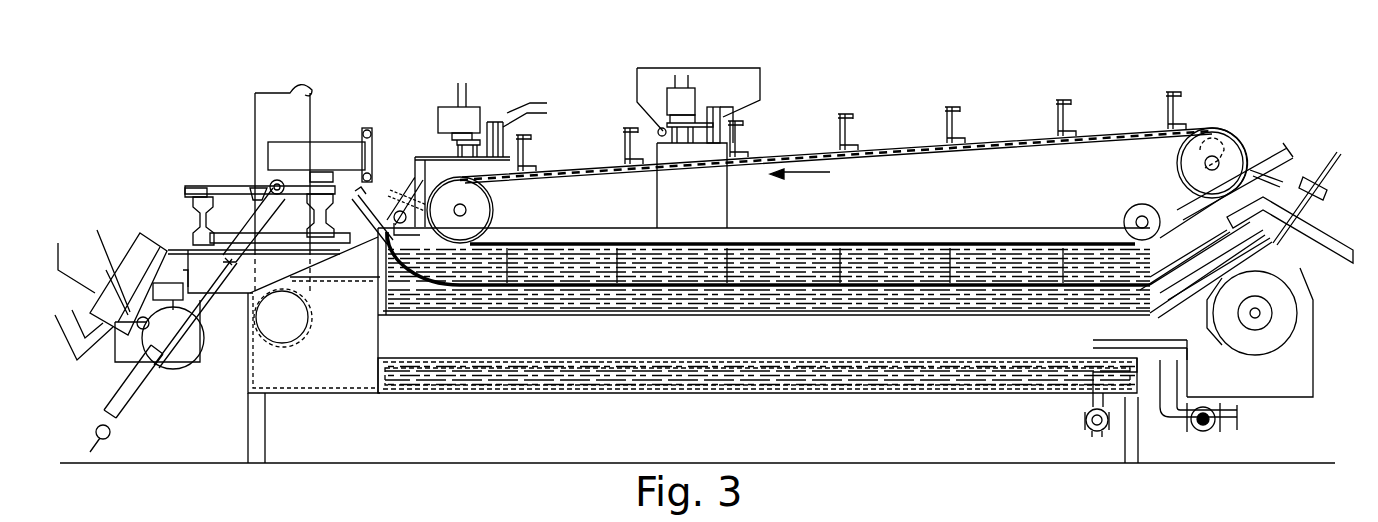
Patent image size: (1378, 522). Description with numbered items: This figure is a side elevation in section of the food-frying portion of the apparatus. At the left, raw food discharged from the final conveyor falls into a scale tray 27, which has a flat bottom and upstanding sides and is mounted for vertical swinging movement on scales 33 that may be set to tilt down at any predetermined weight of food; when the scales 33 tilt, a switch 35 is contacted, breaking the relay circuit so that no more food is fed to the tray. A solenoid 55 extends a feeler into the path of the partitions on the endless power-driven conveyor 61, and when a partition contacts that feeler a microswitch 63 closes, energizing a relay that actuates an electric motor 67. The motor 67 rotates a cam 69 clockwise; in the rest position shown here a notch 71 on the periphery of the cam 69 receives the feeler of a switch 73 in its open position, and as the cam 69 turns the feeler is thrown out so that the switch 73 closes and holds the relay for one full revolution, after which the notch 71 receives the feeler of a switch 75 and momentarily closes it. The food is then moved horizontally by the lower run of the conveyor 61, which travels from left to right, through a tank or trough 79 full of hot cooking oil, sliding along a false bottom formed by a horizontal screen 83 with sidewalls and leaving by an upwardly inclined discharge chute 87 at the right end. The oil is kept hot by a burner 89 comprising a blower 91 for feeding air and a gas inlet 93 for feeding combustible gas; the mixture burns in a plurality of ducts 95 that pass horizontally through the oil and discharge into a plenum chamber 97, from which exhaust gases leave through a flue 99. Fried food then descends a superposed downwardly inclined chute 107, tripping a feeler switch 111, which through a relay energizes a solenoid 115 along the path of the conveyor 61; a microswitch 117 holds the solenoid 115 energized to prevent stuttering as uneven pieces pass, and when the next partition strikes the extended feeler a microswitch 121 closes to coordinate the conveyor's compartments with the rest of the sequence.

The scale tray 27 is at (325, 150).
The scales 33 is at (235, 190).
The switch 35 is at (375, 210).
The solenoid 55 is at (455, 125).
The endless power-driven conveyor 61 is at (880, 245).
The microswitch 63 is at (497, 125).
The electric motor 67 is at (220, 352).
The cam 69 is at (175, 370).
The notch 71 is at (137, 330).
The switch 73 is at (106, 268).
The switch 75 is at (175, 283).
The tank or trough 79 is at (752, 395).
The horizontal screen 83 is at (675, 290).
The discharge chute 87 is at (1193, 200).
The burner 89 is at (1018, 348).
The blower 91 is at (1280, 316).
The gas inlet 93 is at (1175, 425).
The ducts 95 is at (630, 342).
The plenum chamber 97 is at (340, 375).
The flue 99 is at (262, 110).
The downwardly inclined chute 107 is at (1300, 244).
The feeler switch 111 is at (1315, 190).
The solenoid 115 is at (680, 95).
The microswitch 117 is at (665, 150).
The microswitch 121 is at (730, 107).